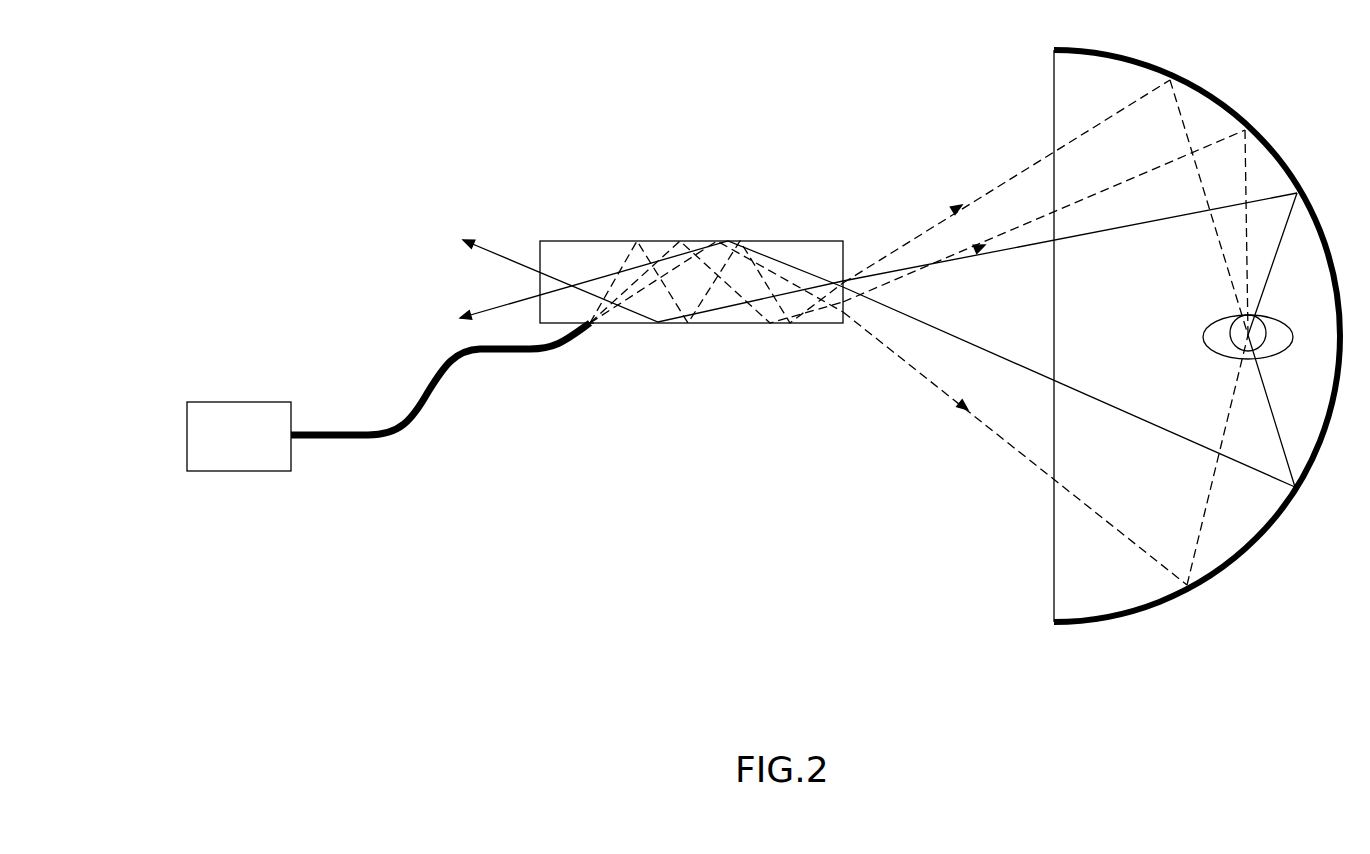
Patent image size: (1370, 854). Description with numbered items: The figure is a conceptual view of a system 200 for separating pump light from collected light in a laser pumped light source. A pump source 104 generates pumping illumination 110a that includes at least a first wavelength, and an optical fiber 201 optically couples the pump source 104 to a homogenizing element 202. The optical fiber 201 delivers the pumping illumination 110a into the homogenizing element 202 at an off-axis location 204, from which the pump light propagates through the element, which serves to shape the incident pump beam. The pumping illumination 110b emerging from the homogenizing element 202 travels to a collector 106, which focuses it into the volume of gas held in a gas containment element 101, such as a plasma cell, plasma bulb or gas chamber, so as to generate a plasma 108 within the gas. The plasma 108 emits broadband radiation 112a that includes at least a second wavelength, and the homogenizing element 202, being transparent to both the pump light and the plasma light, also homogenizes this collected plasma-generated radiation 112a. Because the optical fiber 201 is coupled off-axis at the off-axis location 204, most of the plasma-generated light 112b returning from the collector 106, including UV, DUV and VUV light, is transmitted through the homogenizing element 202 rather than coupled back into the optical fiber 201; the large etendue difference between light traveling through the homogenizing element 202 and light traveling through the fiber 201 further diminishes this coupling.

The system 200 is at (381, 93).
The pump source 104 is at (257, 447).
The optical fiber 201 is at (418, 400).
The homogenizing element 202 is at (550, 240).
The off-axis location 204 is at (599, 334).
The pumping illumination 110a is at (625, 268).
The pumping illumination 110b is at (993, 185).
The broadband radiation 112a is at (1090, 240).
The plasma-generated light 112b is at (625, 274).
The collector 106 is at (1206, 90).
The gas containment element 101 is at (1213, 352).
The plasma 108 is at (1268, 322).